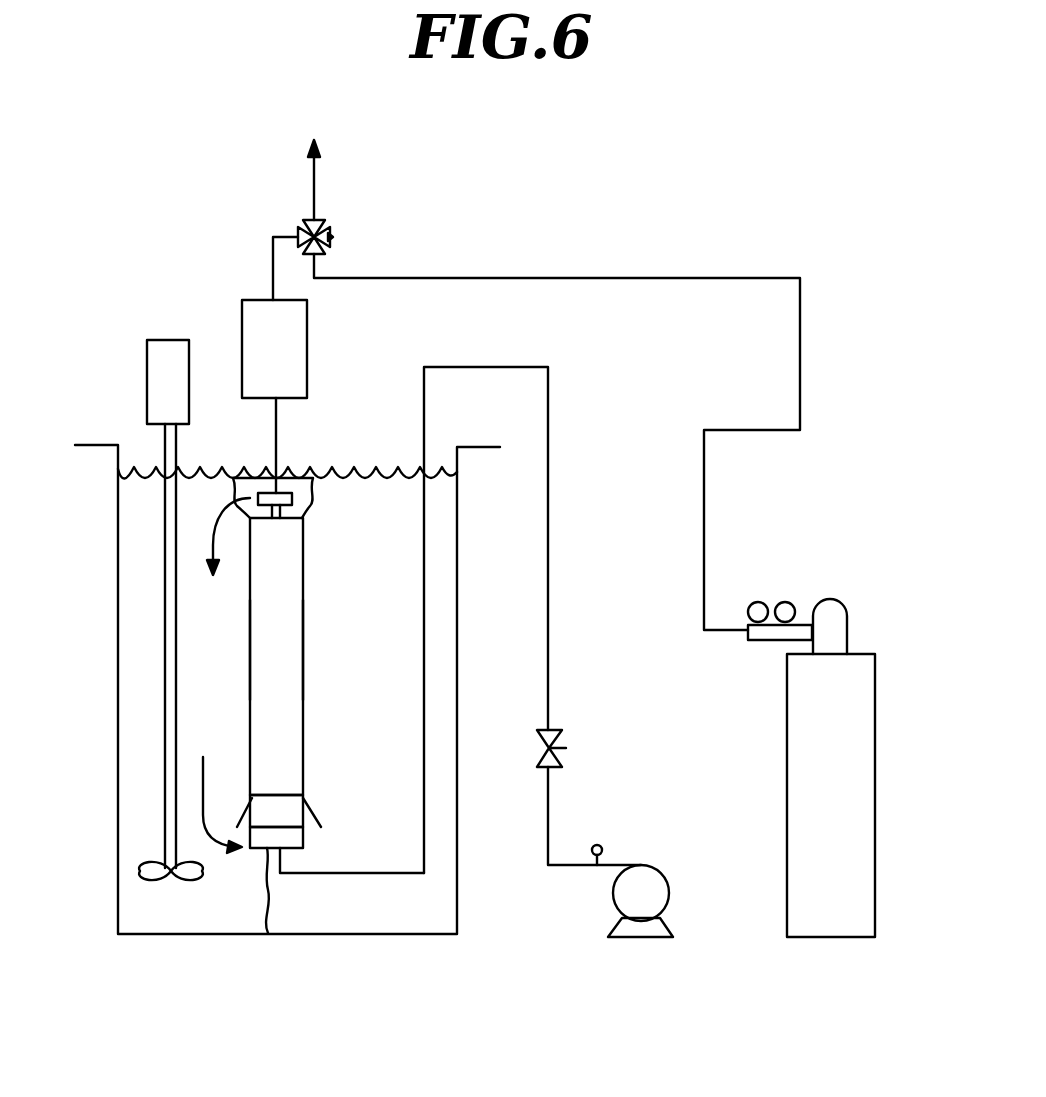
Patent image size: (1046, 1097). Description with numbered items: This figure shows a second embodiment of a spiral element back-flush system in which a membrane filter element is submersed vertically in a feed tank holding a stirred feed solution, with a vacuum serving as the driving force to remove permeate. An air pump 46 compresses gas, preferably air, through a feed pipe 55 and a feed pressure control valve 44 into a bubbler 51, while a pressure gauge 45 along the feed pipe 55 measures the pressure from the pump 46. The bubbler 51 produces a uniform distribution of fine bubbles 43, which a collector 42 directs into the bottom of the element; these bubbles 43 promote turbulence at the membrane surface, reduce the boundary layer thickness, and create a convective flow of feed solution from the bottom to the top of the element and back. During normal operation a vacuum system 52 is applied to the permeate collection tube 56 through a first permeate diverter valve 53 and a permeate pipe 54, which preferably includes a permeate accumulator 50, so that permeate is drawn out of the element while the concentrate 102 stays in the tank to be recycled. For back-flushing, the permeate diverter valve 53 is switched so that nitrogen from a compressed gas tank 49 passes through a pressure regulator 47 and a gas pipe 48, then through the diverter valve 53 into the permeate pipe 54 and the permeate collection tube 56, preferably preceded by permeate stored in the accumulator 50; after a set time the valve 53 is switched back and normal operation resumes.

The collector 42 is at (313, 807).
The bubbles 43 is at (303, 823).
The feed pressure control valve 44 is at (566, 747).
The pressure gauge 45 is at (602, 848).
The air pump 46 is at (663, 902).
The pressure regulator 47 is at (790, 600).
The gas pipe 48 is at (800, 360).
The compressed gas tank 49 is at (787, 760).
The permeate accumulator 50 is at (307, 350).
The bubbler 51 is at (268, 933).
The vacuum system 52 is at (317, 163).
The first permeate diverter valve 53 is at (334, 237).
The permeate pipe 54 is at (273, 268).
The feed pipe 55 is at (548, 603).
The permeate collection tube 56 is at (288, 595).
The concentrate 102 is at (212, 533).